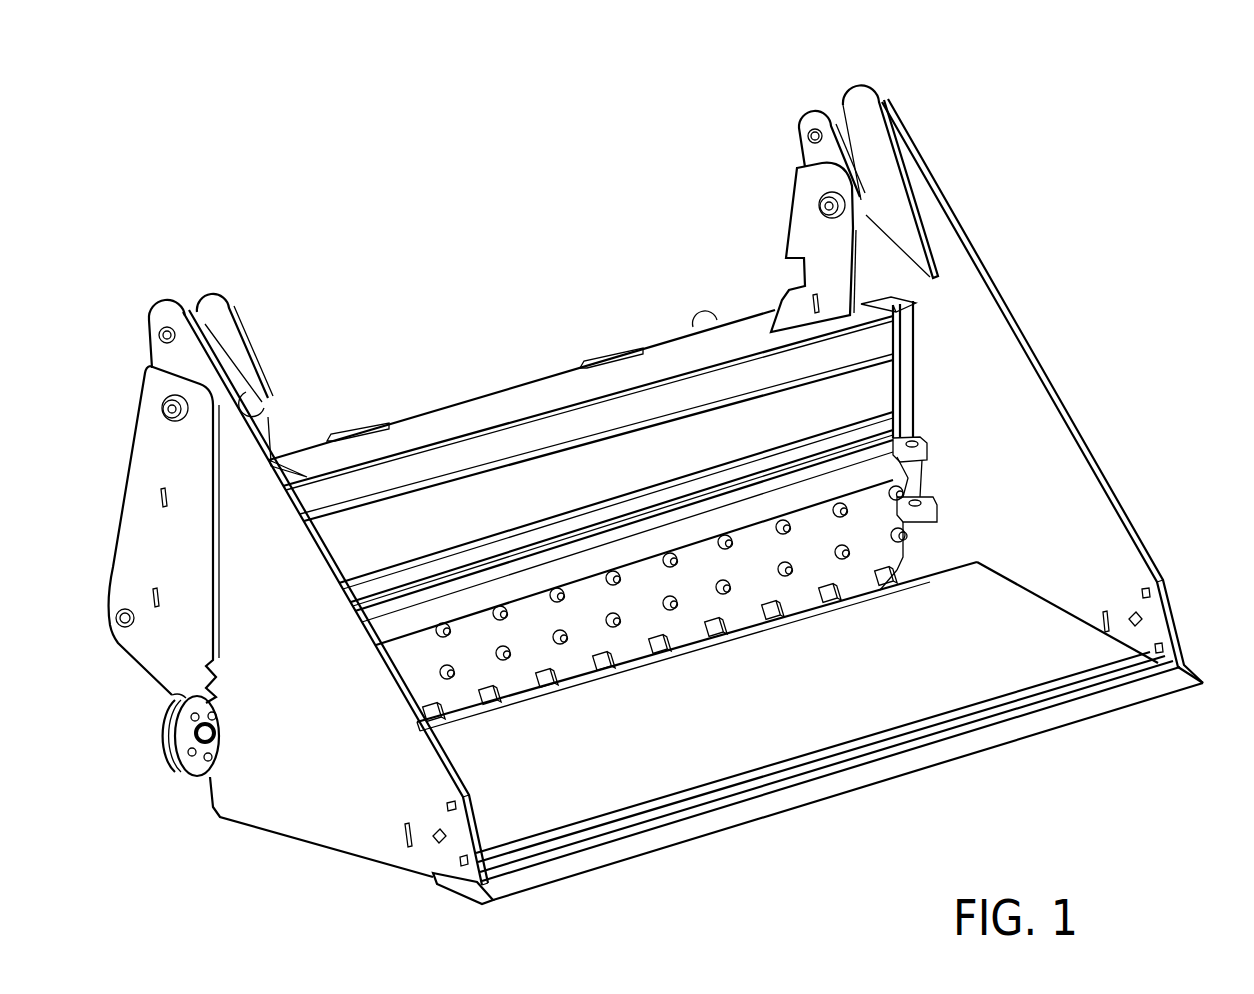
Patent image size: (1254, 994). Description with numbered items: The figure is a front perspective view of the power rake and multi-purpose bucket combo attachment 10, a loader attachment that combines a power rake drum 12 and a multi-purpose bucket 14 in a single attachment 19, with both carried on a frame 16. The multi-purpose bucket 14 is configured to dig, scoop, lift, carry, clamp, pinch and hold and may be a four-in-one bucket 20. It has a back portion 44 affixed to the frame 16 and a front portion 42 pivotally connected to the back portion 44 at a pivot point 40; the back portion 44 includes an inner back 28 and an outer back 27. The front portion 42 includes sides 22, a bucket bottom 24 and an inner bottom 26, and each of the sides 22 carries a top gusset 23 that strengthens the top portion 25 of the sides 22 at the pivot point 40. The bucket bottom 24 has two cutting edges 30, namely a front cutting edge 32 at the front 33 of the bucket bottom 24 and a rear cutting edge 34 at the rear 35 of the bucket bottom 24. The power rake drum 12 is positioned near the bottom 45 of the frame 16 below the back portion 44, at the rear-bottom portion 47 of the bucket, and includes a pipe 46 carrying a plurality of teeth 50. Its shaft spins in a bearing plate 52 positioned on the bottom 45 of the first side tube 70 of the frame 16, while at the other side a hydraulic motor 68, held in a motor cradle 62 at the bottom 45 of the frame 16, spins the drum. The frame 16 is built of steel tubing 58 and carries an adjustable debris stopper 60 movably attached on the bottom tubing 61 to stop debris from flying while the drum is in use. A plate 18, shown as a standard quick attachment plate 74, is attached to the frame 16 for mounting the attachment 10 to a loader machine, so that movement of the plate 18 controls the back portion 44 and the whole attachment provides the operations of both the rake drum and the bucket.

The power rake and multi-purpose bucket combo attachment 10 is at (1015, 66).
The power rake drum 12 is at (902, 476).
The multi-purpose bucket 14 is at (239, 874).
The frame 16 is at (724, 356).
The plate 18 is at (460, 380).
The single attachment 19 is at (1080, 121).
The 4-N-1 bucket 20 is at (463, 888).
The sides 22 is at (342, 746).
The top gusset 23 is at (233, 345).
The bucket bottom 24 is at (392, 868).
The top portion 25 is at (126, 354).
The inner bottom 26 is at (745, 734).
The outer back 27 is at (148, 540).
The inner back 28 is at (265, 418).
The cutting edges 30 is at (850, 778).
The front cutting edge 32 is at (826, 766).
The front 33 is at (730, 849).
The rear cutting edge 34 is at (925, 593).
The rear 35 is at (771, 655).
The pivot point 40 is at (173, 413).
The front portion 42 is at (1149, 443).
The back portion 44 is at (84, 640).
The bottom 45 is at (150, 705).
The pipe 46 is at (500, 675).
The rear-bottom portion 47 is at (963, 546).
The teeth 50 is at (570, 643).
The bearing plate 52 is at (930, 510).
The steel tubing 58 is at (910, 358).
The adjustable debris stopper 60 is at (757, 503).
The bottom tubing 61 is at (428, 560).
The motor cradle 62 is at (180, 705).
The hydraulic motor 68 is at (195, 726).
The first side tube 70 is at (913, 388).
The standard quick attachment plate 74 is at (581, 400).